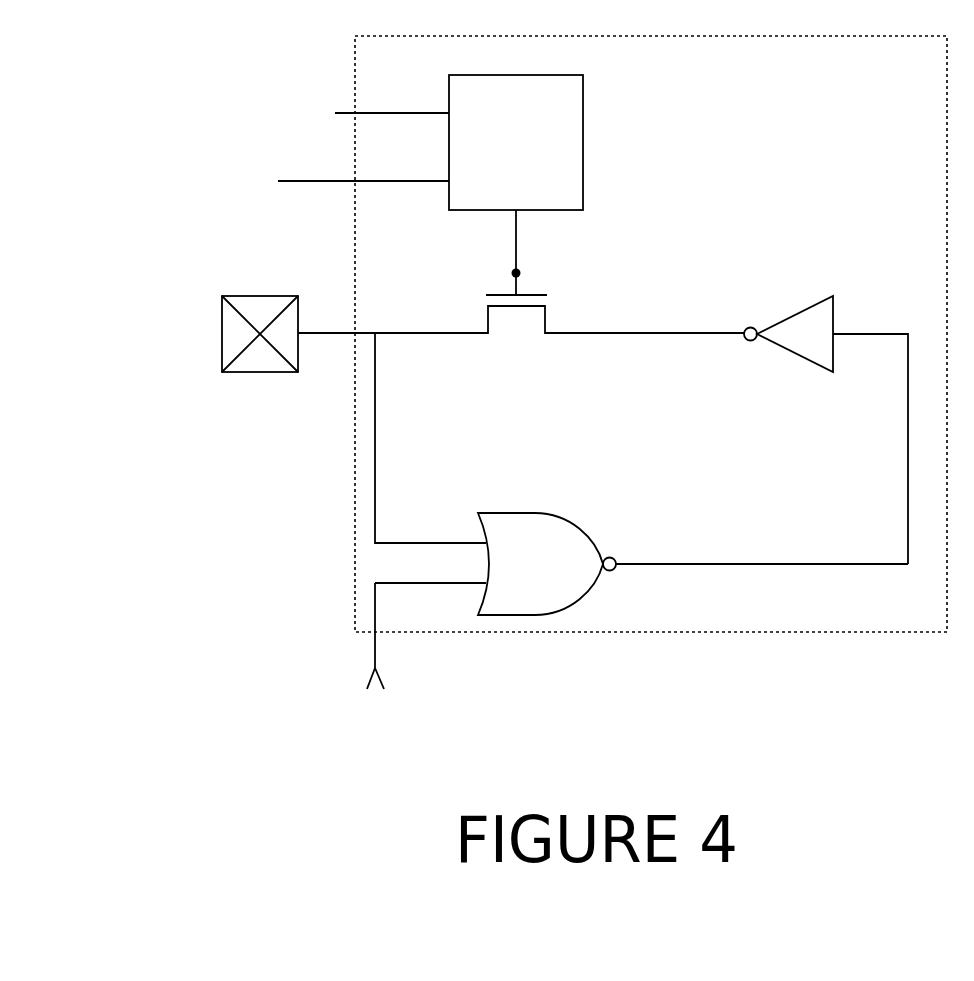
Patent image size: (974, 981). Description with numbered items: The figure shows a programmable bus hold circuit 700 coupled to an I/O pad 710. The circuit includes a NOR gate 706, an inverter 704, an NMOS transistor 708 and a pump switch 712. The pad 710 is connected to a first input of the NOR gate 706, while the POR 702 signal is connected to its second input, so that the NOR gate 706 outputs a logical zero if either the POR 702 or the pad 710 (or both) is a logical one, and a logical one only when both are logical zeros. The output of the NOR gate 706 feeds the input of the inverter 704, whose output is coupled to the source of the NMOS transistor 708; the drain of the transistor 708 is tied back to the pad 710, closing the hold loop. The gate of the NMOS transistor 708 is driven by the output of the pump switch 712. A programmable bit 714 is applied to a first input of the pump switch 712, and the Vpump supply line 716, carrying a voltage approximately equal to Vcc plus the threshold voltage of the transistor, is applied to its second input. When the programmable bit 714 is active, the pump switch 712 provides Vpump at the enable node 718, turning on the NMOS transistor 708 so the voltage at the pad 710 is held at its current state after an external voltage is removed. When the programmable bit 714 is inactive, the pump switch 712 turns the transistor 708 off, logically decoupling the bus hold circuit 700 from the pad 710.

The programmable bus hold circuit 700 is at (651, 334).
The POR 702 is at (375, 672).
The inverter 704 is at (826, 430).
The NOR gate 706 is at (641, 474).
The NMOS transistor 708 is at (521, 307).
The I/O pad 710 is at (231, 372).
The pump switch 712 is at (583, 128).
The programmable bit 714 is at (363, 196).
The pump voltage input line 716 is at (296, 109).
The Vpump / enable node 718 is at (358, 226).